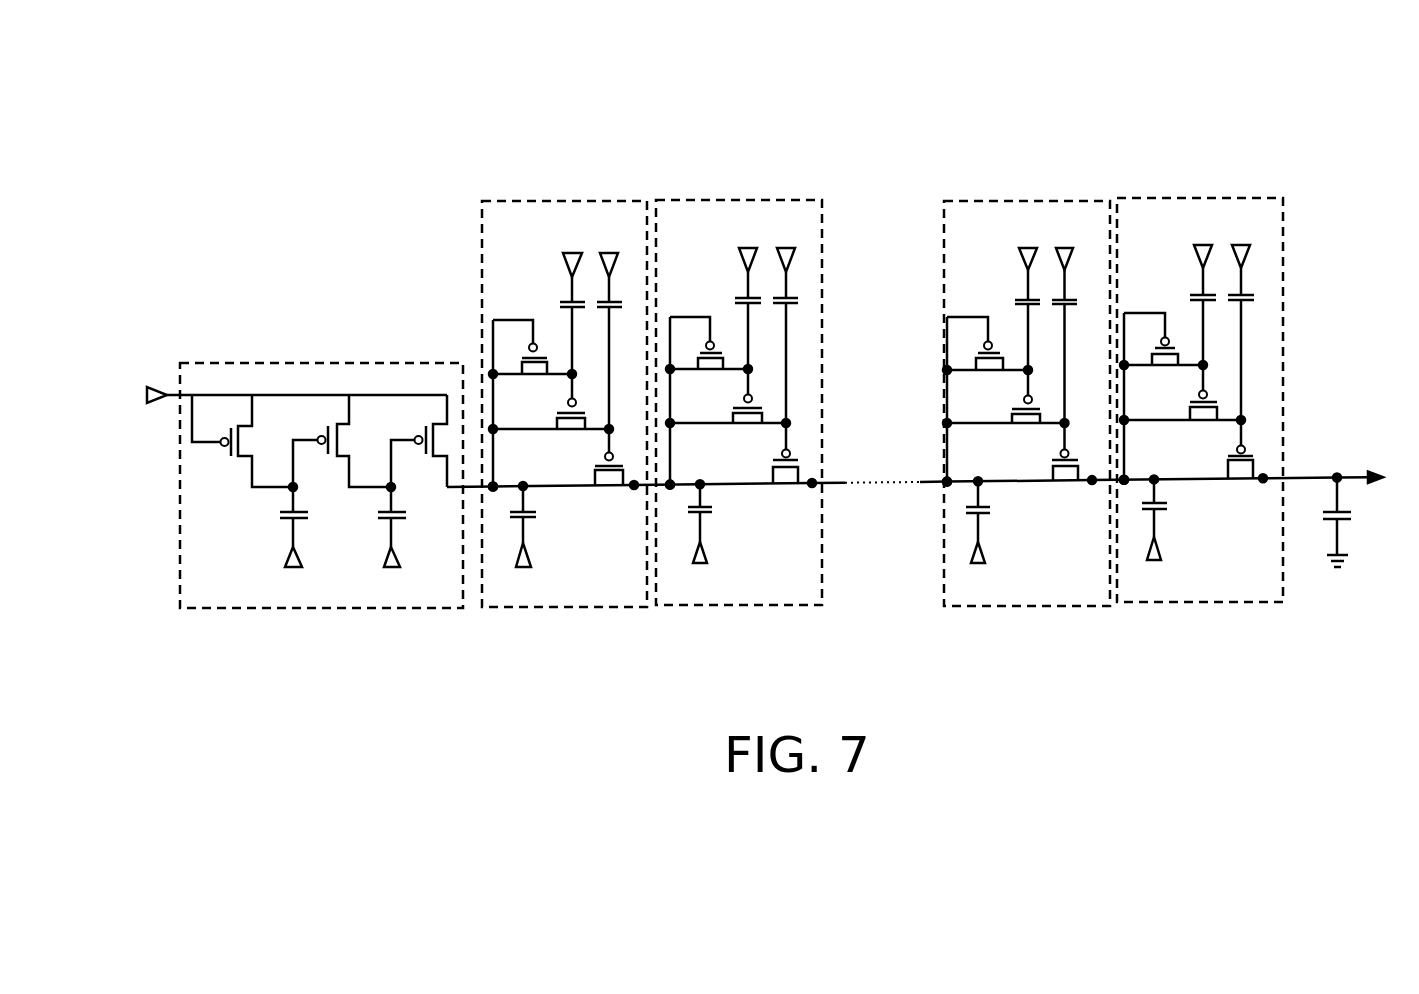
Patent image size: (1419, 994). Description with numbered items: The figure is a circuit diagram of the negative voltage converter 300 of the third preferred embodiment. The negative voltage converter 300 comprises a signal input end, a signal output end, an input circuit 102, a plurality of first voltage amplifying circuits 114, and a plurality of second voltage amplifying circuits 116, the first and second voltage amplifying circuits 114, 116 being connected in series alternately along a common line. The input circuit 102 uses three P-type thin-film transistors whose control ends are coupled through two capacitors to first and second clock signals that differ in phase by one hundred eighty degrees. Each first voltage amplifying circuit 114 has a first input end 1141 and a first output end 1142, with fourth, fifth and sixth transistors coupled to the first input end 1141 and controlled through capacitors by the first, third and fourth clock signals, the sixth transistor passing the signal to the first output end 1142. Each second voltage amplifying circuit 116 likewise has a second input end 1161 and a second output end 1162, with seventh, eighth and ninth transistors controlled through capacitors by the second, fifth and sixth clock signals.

The negative voltage converter 300 is at (867, 94).
The input circuit 102 is at (322, 362).
The first voltage amplifying circuit 114 is at (565, 198).
The second voltage amplifying circuit 116 is at (738, 197).
The first input end 1141 is at (493, 486).
The first output end 1142 is at (634, 485).
The second input end 1161 is at (670, 484).
The second output end 1162 is at (812, 483).